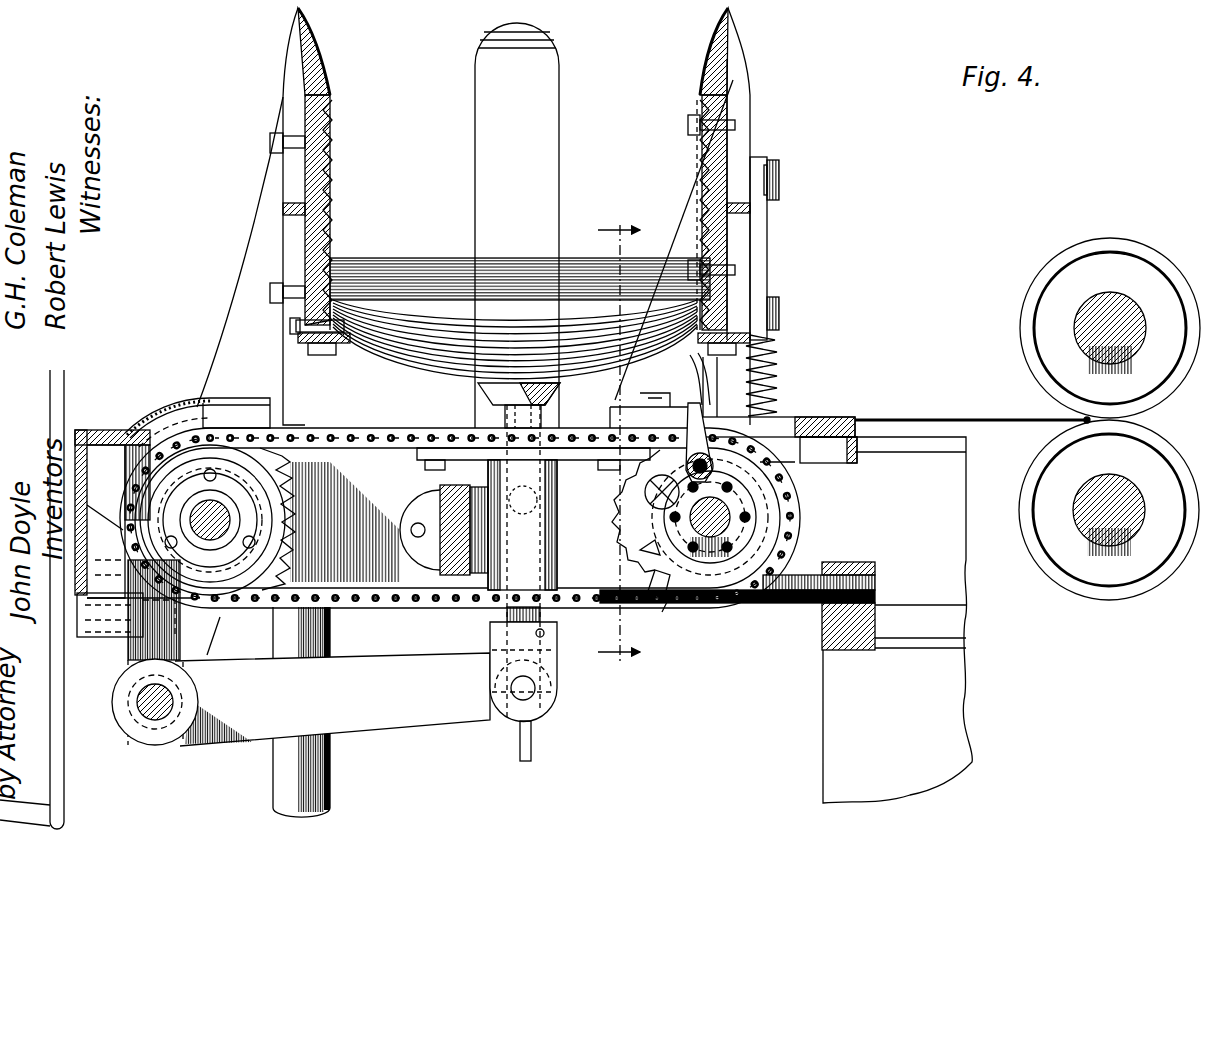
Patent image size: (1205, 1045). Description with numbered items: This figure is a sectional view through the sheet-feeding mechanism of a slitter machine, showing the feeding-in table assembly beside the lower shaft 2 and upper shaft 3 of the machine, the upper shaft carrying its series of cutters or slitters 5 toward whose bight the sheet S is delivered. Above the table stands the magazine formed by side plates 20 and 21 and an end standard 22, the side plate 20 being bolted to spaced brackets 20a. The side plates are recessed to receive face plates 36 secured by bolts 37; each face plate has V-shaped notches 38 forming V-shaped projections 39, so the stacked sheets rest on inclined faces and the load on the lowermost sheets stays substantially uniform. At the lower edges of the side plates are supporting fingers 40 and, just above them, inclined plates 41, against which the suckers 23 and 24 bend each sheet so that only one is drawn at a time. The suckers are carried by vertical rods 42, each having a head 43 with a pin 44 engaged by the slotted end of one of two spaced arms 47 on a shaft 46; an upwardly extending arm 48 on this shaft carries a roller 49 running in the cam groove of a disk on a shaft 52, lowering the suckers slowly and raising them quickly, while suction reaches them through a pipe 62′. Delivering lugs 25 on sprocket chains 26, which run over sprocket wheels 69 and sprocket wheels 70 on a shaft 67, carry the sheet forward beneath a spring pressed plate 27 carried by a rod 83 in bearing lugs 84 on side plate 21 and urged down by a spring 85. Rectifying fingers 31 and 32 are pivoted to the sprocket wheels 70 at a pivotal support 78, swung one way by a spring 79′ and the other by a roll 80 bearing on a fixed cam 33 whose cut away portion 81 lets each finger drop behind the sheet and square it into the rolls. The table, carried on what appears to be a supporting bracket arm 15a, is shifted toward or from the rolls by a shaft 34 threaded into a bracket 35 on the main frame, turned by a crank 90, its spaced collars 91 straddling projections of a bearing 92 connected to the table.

The lower shaft 2 is at (1106, 482).
The upper shaft 3 is at (1116, 312).
The cutters or slitters 5 is at (1186, 447).
The sheet S is at (950, 420).
The supporting post 15a is at (330, 784).
The side plate 20 is at (302, 172).
The spaced brackets 20a is at (275, 248).
The side plate 21 is at (742, 150).
The end standard 22 is at (517, 225).
The sucker 23 is at (486, 390).
The sucker 24 is at (780, 313).
The delivering lugs 25 is at (200, 415).
The sprocket chains 26 is at (520, 453).
The spring pressed plate 27 is at (816, 432).
The rectifying finger 31 is at (795, 484).
The rectifying finger 32 is at (693, 518).
The cam 33 is at (770, 278).
The shaft 34 is at (777, 610).
The bracket 35 is at (862, 614).
The face plates 36 is at (772, 178).
The bolts 37 is at (737, 126).
The V-shaped notches 38 is at (730, 233).
The V-shaped projections 39 is at (700, 172).
The supporting fingers 40 is at (340, 346).
The inclined plates 41 is at (300, 333).
The vertical rods 42 is at (542, 629).
The head 43 is at (548, 660).
The pin 44 is at (508, 690).
The shaft 46 is at (165, 703).
The spaced arms 47 is at (309, 681).
The upwardly extending arm 48 is at (130, 668).
The roller 49 is at (125, 535).
The shaft 52 is at (228, 519).
The pipe 62′ is at (532, 743).
The shaft 67 is at (640, 540).
The sprocket wheels 69 is at (284, 492).
The sprocket wheels 70 is at (645, 562).
The pivotal support 78 is at (712, 470).
The spring 79′ is at (640, 550).
The roll 80 is at (646, 492).
The cut away portion 81 is at (667, 606).
The rod 83 is at (748, 528).
The bearing lugs 84 is at (780, 190).
The spring 85 is at (778, 392).
The crank 90 is at (62, 757).
The spaced collars 91 is at (140, 637).
The bearing 92 is at (80, 592).